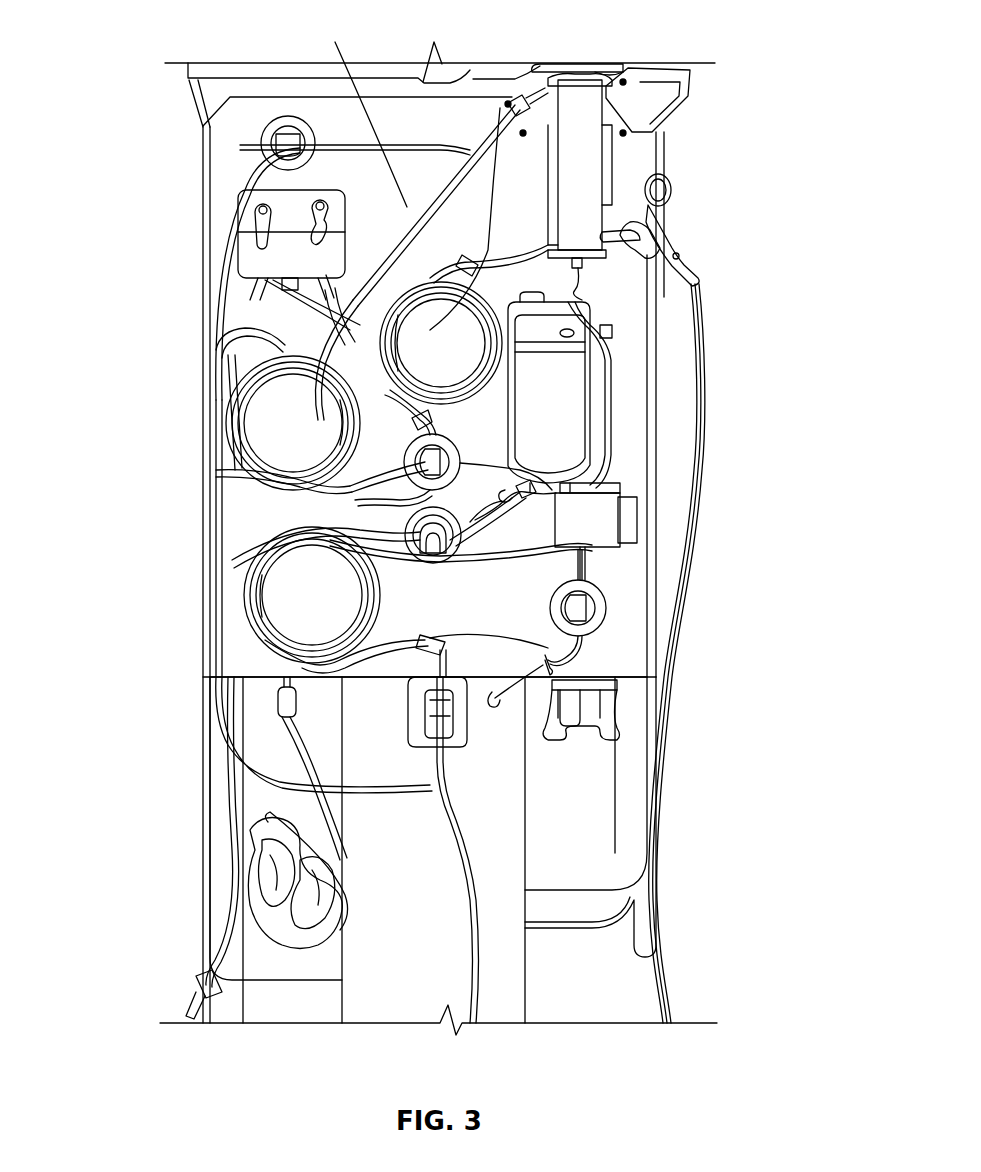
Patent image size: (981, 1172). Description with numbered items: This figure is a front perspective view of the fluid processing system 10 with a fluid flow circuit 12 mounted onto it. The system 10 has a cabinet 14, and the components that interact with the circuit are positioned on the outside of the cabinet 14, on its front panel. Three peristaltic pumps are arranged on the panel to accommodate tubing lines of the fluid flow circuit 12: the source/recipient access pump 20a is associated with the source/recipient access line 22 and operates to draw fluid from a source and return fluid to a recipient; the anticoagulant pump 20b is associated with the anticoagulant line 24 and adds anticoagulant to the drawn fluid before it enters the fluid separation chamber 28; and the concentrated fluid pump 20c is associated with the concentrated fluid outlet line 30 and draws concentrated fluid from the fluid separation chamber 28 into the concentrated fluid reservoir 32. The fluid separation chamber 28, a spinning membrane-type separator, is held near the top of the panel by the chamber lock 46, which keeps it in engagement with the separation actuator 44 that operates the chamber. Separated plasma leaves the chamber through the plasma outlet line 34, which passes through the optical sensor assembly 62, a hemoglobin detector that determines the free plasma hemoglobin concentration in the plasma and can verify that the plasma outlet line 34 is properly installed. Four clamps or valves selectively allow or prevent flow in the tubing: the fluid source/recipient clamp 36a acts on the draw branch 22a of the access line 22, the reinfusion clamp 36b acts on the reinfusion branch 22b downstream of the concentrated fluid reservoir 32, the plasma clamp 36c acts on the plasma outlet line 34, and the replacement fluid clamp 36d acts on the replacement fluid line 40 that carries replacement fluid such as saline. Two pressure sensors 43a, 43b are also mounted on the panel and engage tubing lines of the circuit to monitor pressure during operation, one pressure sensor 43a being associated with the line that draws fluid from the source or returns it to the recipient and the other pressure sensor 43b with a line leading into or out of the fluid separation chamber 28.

The fluid processing system 10 is at (358, 968).
The fluid flow circuit 12 is at (240, 152).
The cabinet 14 is at (496, 615).
The source/recipient access pump 20a is at (285, 578).
The anticoagulant pump 20b is at (280, 420).
The concentrated fluid pump 20c is at (420, 338).
The source/recipient access line 22 is at (470, 767).
The draw branch 22a is at (361, 111).
The reinfusion branch 22b is at (580, 548).
The anticoagulant line 24 is at (265, 776).
The fluid separation chamber 28 is at (583, 147).
The concentrated fluid outlet line 30 is at (490, 247).
The concentrated fluid reservoir 32 is at (553, 422).
The plasma outlet line 34 is at (613, 394).
The fluid source/recipient clamp 36a is at (600, 488).
The reinfusion clamp 36b is at (445, 468).
The plasma clamp 36c is at (585, 612).
The replacement fluid clamp 36d is at (288, 138).
The replacement fluid line 40 is at (427, 150).
The pressure sensor 43a is at (260, 212).
The pressure sensor 43b is at (310, 208).
The separation actuator 44 is at (615, 68).
The chamber lock 46 is at (672, 264).
The optical sensor assembly 62 is at (600, 522).